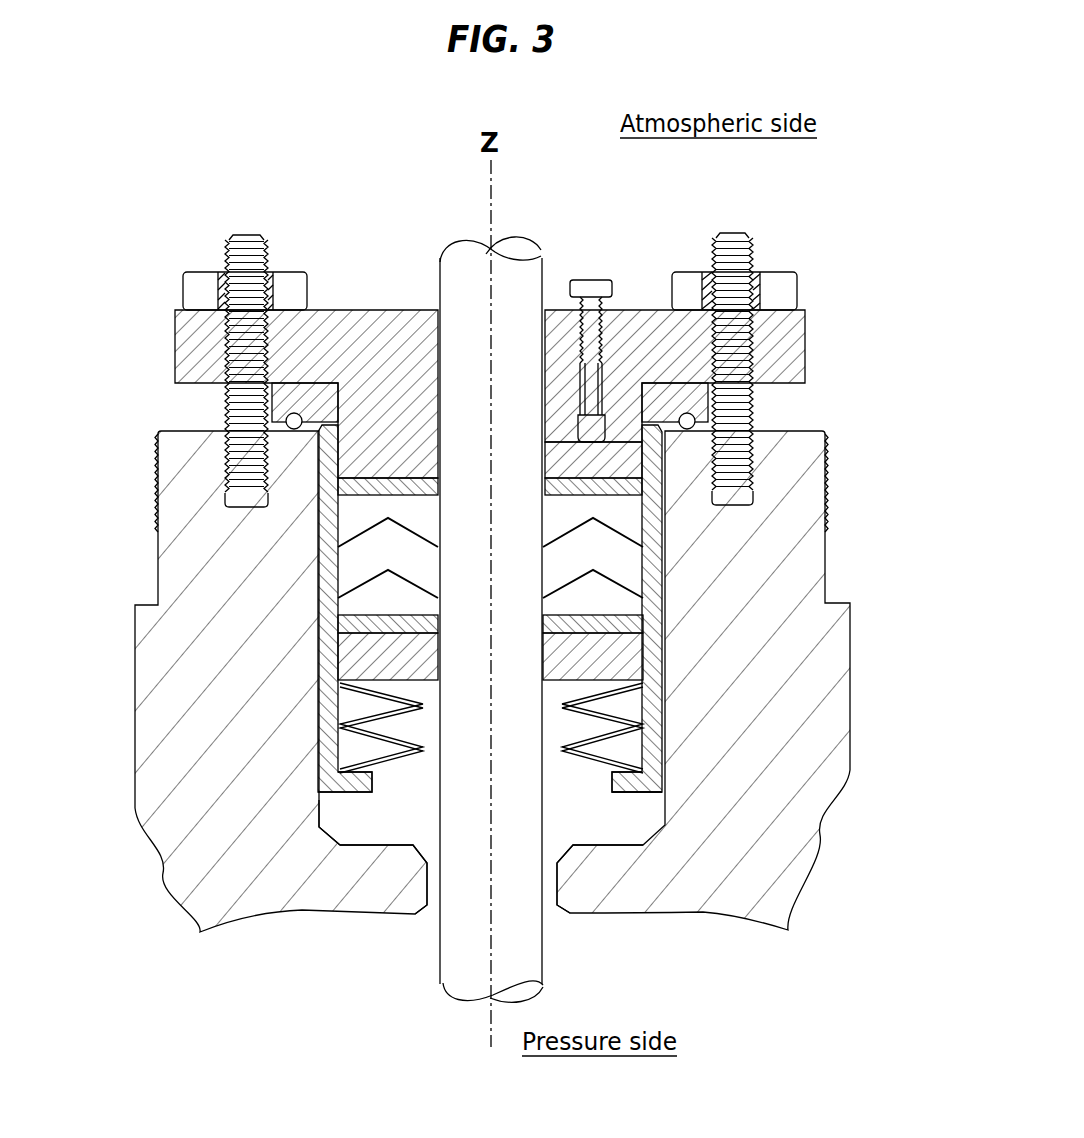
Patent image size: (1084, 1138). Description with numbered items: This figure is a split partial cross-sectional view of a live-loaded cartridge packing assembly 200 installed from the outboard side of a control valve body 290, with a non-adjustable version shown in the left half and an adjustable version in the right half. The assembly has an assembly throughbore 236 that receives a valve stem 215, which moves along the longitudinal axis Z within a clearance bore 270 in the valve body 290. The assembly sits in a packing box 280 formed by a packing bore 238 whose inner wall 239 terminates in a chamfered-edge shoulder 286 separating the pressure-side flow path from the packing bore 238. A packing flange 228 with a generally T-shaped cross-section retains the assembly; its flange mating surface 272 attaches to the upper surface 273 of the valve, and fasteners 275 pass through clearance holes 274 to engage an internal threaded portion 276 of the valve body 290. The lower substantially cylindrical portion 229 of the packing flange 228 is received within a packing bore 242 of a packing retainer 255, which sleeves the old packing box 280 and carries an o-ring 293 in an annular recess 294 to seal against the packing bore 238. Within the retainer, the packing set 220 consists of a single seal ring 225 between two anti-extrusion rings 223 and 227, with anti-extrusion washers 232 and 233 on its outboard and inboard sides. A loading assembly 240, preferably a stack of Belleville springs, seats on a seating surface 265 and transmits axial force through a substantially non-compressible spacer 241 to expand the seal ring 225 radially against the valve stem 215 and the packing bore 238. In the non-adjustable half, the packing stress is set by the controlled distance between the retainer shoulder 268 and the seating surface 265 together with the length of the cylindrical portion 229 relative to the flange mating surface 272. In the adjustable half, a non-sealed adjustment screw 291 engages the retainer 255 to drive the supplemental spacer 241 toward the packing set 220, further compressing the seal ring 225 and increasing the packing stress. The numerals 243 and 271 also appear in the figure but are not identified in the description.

The cartridge packing assembly 200 is at (338, 200).
The valve stem 215 is at (455, 260).
The packing set 220 is at (681, 600).
The anti-extrusion ring 223 is at (350, 521).
The seal ring 225 is at (350, 567).
The anti-extrusion ring 227 is at (353, 611).
The packing flange 228 is at (166, 357).
The lower cylindrical portion 229 is at (350, 405).
The anti-extrusion washer 232 is at (338, 488).
The anti-extrusion washer 233 is at (353, 631).
The assembly throughbore 236 is at (436, 282).
The packing bore 238 is at (681, 634).
The inner wall 239 is at (306, 828).
The loading assembly 240 is at (668, 752).
The spacer 241 is at (663, 493).
The packing bore of retainer 242 is at (646, 557).
The sleeve wall 243 is at (316, 441).
The packing retainer 255 is at (616, 778).
The seating surface 265 is at (612, 773).
The retainer shoulder 268 is at (663, 381).
The clearance bore 270 is at (438, 887).
The recess 271 is at (385, 793).
The flange mating surface 272 is at (768, 385).
The upper surface 273 is at (808, 422).
The clearance holes 274 is at (760, 394).
The fasteners 275 is at (775, 241).
The internal threaded portion 276 is at (740, 503).
The packing box 280 is at (599, 862).
The chamfered-edge shoulder 286 is at (362, 835).
The control valve body 290 is at (205, 903).
The adjustment screw 291 is at (596, 279).
The o-ring 293 is at (286, 422).
The annular recess 294 is at (227, 388).